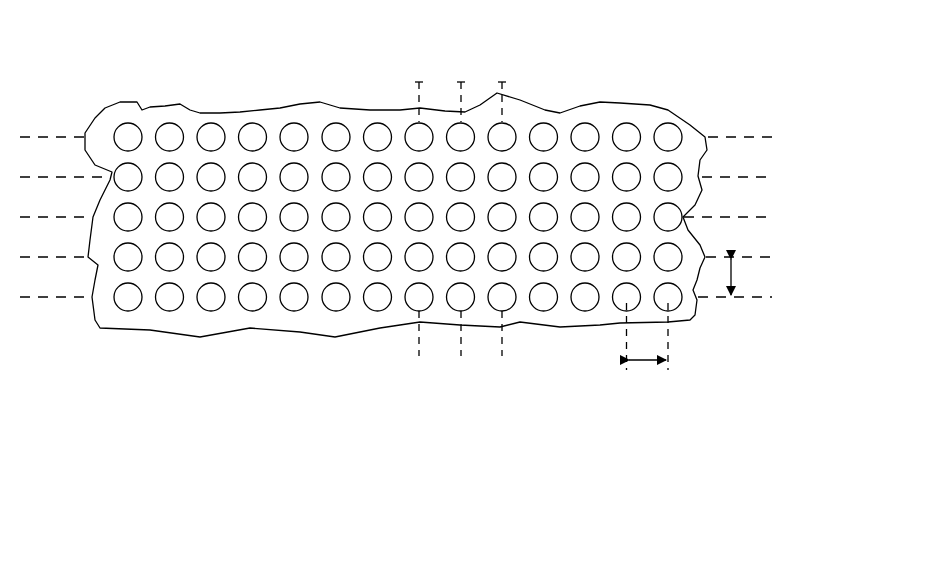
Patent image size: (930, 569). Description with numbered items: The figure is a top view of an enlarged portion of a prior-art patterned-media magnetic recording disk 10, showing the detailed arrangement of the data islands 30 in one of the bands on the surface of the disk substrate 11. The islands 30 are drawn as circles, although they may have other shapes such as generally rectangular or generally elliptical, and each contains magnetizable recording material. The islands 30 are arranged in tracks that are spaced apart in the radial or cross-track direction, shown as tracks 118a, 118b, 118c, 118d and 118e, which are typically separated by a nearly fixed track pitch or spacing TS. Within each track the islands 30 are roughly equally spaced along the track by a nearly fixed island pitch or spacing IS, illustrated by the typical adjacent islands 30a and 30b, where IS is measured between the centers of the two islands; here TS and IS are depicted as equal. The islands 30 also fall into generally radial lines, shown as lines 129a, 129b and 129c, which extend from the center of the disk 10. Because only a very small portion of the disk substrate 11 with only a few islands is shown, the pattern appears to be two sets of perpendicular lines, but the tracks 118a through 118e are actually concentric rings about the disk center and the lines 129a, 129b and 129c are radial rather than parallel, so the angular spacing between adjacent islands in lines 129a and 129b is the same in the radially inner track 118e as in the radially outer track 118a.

The disk 10 is at (176, 44).
The disk substrate 11 is at (196, 323).
The data islands 30 is at (285, 122).
The typical island 30a is at (622, 302).
The typical island 30b is at (675, 302).
The radial line 129a is at (419, 82).
The radial line 129b is at (461, 82).
The radial line 129c is at (502, 82).
The track 118a is at (748, 296).
The track 118b is at (748, 256).
The track 118c is at (748, 216).
The track 118d is at (748, 176).
The track 118e is at (748, 136).